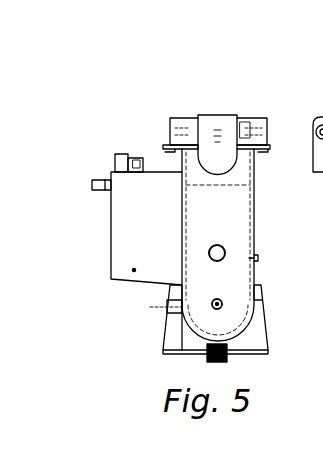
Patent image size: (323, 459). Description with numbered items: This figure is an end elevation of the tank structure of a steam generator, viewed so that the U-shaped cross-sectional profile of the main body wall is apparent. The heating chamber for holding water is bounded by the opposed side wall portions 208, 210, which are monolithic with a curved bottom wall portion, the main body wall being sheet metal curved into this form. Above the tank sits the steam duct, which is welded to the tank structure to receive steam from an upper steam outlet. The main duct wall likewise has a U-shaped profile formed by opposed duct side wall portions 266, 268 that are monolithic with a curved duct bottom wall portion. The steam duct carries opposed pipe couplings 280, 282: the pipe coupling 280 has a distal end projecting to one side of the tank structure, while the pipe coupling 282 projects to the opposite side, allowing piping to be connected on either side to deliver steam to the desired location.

The side wall portion 208 is at (180, 228).
The side wall portion 210 is at (257, 222).
The duct side wall portion 266 is at (198, 137).
The duct side wall portion 268 is at (251, 130).
The pipe coupling 280 is at (168, 128).
The pipe coupling 282 is at (268, 125).